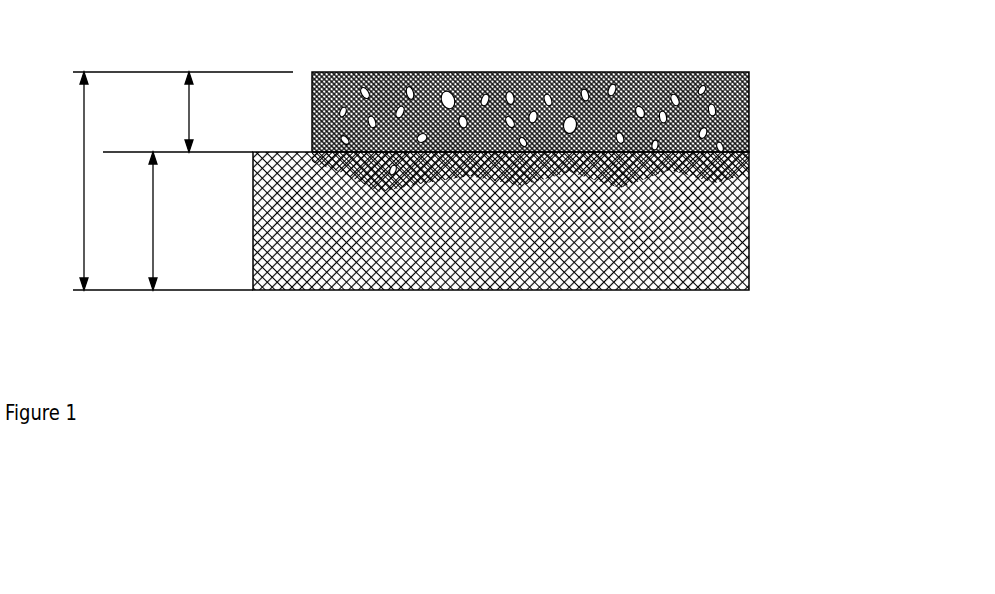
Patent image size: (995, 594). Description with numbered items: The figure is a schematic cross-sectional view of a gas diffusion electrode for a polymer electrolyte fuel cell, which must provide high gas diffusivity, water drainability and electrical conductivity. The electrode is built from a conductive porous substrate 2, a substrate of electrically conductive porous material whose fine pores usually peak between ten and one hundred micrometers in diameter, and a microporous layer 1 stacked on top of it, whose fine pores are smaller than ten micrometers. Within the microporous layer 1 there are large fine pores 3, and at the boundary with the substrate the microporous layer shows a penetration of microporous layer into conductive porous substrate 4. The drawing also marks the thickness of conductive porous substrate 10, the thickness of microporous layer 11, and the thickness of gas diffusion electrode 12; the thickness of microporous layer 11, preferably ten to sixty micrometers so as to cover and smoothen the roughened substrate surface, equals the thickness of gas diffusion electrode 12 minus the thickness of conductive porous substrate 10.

The microporous layer 1 is at (765, 125).
The conductive porous substrate 2 is at (765, 221).
The large fine pores 3 is at (698, 93).
The penetration of microporous layer into conductive porous substrate 4 is at (387, 188).
The thickness of conductive porous substrate 10 is at (131, 221).
The thickness of microporous layer 11 is at (164, 112).
The thickness of gas diffusion electrode 12 is at (55, 181).